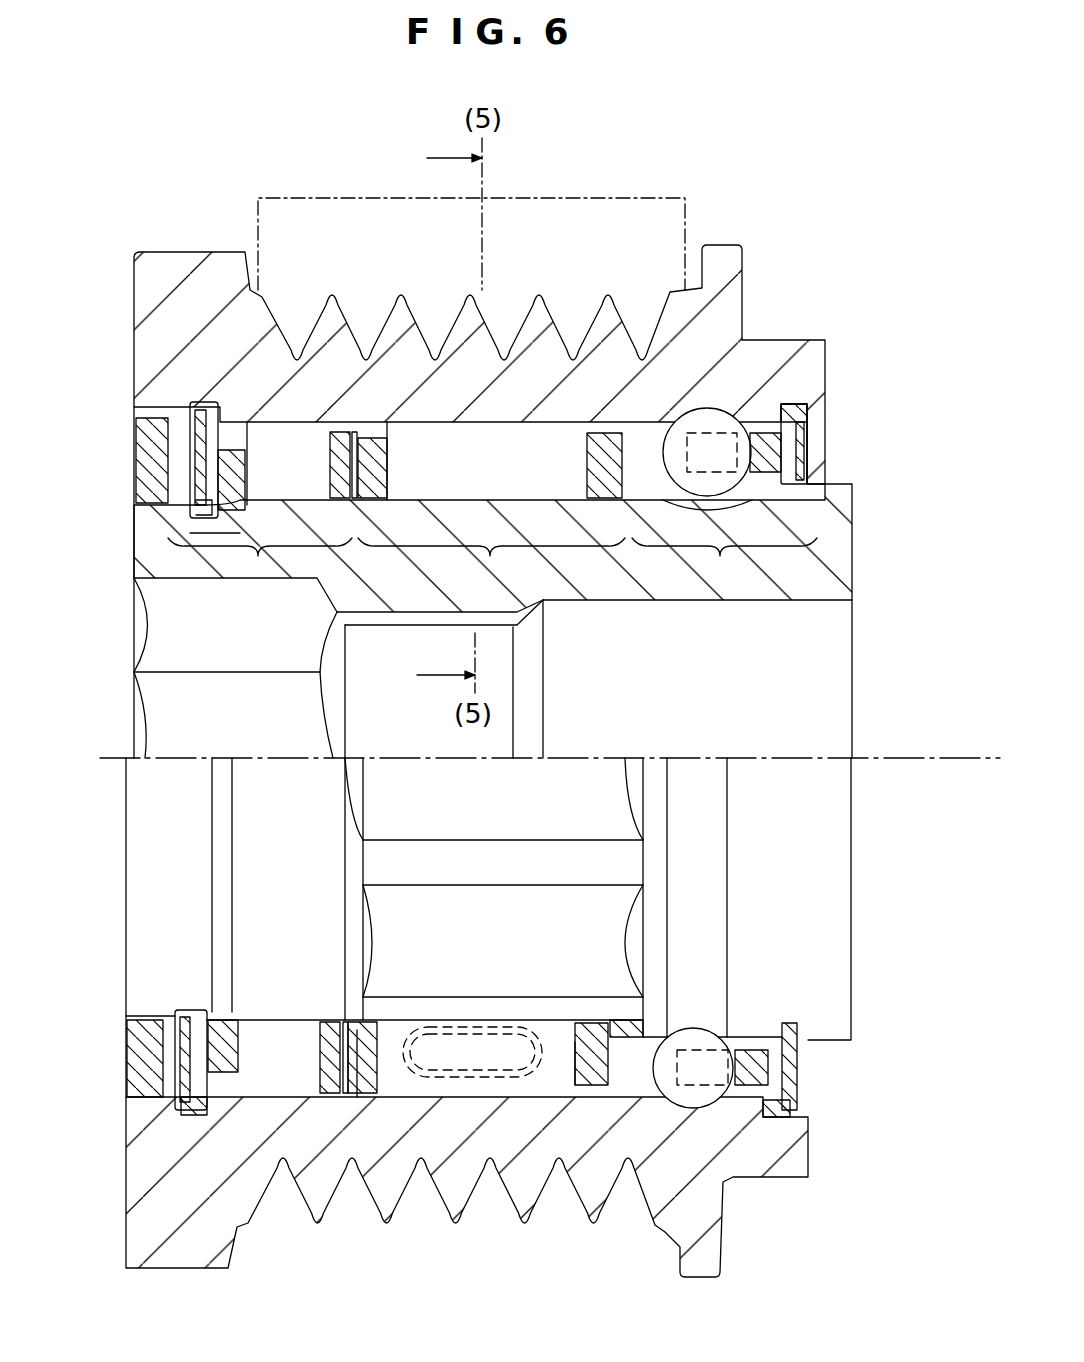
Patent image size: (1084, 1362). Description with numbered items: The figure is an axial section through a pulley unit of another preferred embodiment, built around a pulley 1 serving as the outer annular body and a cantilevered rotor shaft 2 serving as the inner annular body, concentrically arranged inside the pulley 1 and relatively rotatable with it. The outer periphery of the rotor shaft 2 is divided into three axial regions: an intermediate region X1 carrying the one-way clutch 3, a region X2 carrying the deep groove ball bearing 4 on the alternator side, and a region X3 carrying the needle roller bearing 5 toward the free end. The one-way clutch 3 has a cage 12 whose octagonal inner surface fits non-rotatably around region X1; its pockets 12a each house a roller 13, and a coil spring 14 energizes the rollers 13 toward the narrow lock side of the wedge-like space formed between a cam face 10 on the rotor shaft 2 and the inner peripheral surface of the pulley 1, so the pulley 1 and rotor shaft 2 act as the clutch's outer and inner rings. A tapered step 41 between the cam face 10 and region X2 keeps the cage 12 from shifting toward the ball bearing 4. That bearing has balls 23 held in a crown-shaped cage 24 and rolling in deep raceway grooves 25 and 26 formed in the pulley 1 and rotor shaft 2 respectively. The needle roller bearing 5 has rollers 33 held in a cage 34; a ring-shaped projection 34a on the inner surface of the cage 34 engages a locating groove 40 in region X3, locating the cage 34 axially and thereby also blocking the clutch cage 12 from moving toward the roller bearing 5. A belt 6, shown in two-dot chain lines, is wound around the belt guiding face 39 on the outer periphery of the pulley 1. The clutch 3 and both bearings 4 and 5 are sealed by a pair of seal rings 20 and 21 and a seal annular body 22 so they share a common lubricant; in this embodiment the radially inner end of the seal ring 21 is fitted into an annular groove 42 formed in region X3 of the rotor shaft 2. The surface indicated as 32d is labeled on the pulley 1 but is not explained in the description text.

The pulley 1 is at (721, 323).
The rotor shaft 2 is at (843, 565).
The one-way clutch 3 is at (487, 655).
The deep groove ball bearing 4 is at (766, 646).
The needle roller bearing 5 is at (179, 656).
The belt 6 is at (582, 198).
The cam face 10 is at (510, 495).
The cage 12 is at (606, 430).
The pocket 12a is at (575, 1042).
The roller 13 is at (450, 440).
The coil spring 14 is at (481, 1027).
The seal ring 20 is at (808, 438).
The seal ring 21 is at (190, 450).
The seal annular body 22 is at (140, 470).
The ball 23 is at (690, 1035).
The cage 24 is at (833, 726).
The raceway groove 25 is at (707, 410).
The raceway groove 26 is at (718, 490).
The pulley inner peripheral surface 32d is at (357, 1097).
The roller 33 is at (303, 440).
The cage 34 is at (342, 428).
The ring-shaped projection 34a is at (195, 533).
The belt guiding face 39 is at (457, 327).
The locating groove 40 is at (236, 512).
The tapered step 41 is at (630, 490).
The annular groove 42 is at (185, 517).
The intermediate region X1 is at (491, 559).
The region X2 is at (724, 559).
The region X3 is at (260, 559).